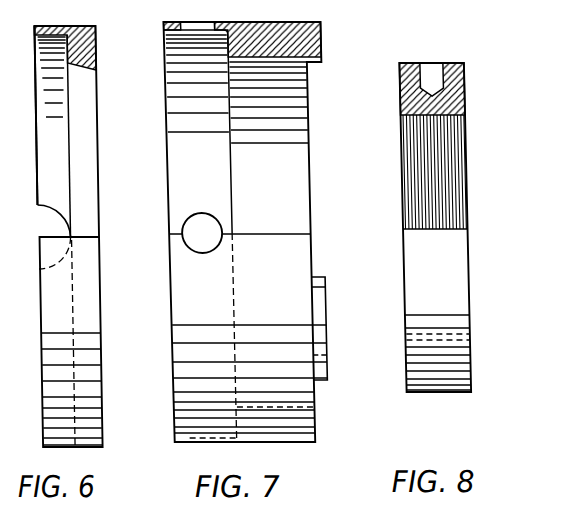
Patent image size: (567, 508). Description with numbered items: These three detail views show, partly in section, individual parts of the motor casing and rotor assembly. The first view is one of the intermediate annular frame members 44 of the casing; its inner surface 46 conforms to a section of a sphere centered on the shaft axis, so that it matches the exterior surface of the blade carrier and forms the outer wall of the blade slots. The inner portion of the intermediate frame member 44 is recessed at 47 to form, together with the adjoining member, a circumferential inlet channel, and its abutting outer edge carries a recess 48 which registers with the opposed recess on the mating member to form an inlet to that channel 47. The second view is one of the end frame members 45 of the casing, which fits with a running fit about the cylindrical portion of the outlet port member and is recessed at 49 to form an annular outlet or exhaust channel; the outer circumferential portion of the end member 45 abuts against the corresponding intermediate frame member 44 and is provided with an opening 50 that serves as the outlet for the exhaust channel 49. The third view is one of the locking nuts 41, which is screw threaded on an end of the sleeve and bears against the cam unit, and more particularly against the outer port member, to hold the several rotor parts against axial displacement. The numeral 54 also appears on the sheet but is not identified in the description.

In FIG. 8, the threaded plug screw 41 is at (464, 343).
In FIG. 6, the sleeve body 44 is at (98, 191).
In FIG. 7, the flange head 45 is at (321, 27).
In FIG. 6, the hatched shoulder section 46 is at (92, 70).
In FIG. 6, the side wall 47 is at (50, 170).
In FIG. 6, the arcuate recess 48 is at (51, 219).
In FIG. 7, the cylindrical body 49 is at (185, 122).
In FIG. 7, the aperture 50 is at (198, 225).
In FIG. 7, the lower end 54 is at (249, 475).